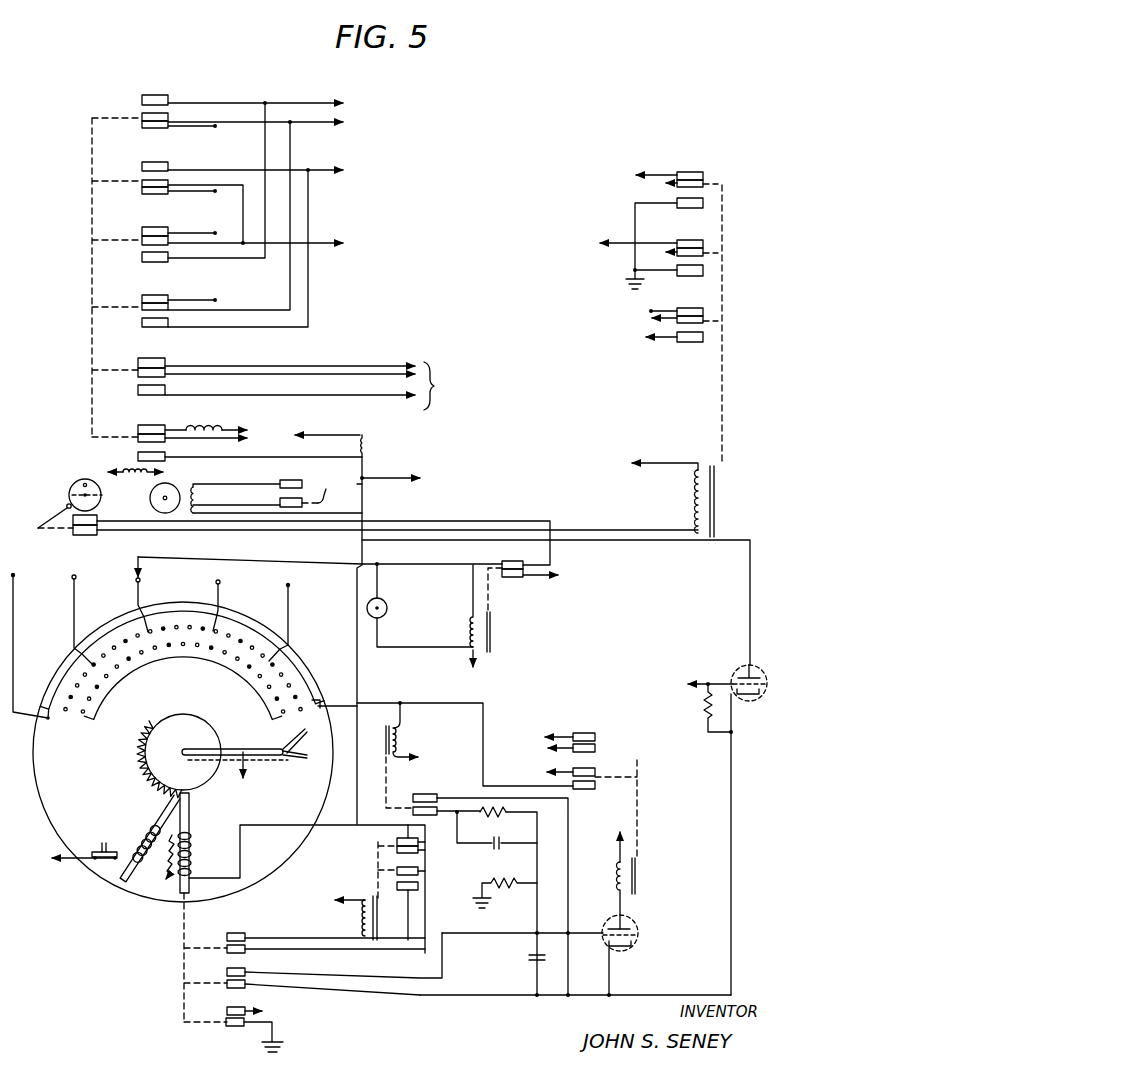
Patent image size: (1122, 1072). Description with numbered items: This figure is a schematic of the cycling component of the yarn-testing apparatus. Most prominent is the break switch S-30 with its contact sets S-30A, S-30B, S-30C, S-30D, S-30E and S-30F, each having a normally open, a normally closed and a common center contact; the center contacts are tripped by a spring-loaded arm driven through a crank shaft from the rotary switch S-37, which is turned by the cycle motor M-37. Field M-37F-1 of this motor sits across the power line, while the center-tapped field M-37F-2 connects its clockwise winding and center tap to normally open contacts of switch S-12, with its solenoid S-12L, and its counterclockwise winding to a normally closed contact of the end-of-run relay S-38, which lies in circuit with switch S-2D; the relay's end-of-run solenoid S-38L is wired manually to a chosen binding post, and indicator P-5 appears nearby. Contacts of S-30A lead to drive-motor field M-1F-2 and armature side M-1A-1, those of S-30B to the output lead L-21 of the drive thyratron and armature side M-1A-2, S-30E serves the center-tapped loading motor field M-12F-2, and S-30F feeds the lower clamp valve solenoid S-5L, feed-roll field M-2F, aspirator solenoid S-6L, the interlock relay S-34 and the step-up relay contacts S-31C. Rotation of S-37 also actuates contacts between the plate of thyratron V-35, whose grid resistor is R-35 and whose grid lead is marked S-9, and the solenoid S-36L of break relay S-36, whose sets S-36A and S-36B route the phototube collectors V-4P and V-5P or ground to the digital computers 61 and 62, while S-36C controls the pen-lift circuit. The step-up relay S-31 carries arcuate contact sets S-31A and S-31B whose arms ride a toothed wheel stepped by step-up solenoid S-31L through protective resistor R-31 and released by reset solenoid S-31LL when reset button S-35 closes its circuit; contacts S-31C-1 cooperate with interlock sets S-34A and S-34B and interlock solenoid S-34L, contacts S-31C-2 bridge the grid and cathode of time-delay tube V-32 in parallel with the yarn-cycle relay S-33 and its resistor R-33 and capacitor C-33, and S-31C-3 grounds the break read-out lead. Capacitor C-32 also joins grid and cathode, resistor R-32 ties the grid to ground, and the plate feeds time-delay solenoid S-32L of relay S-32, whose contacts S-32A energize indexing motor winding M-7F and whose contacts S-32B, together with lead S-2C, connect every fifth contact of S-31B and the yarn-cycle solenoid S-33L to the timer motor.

The break switch S-30 is at (108, 338).
The first set of break switch contacts S-30A is at (157, 111).
The second set of break switch contacts S-30B is at (171, 203).
The third set of break switch contacts S-30C is at (181, 182).
The fourth set of break switch contacts S-30D is at (203, 224).
The fifth set of break switch contacts S-30E is at (131, 375).
The sixth set of break switch contacts S-30F is at (230, 441).
The field coil of the drive motor M-1F-2 is at (282, 103).
The side of the armature winding of the drive motor M-1A-1 is at (284, 122).
The output lead from the drive thyratron L-21 is at (274, 170).
The side of the armature winding of the drive motor M-1A-2 is at (284, 243).
The center-tapped field winding of the loading motor M-12F-2 is at (330, 386).
The solenoid of the lower clamp valve S-5L is at (212, 420).
The solenoid for the aspirator valve S-6L is at (366, 446).
The field of the feed-roll motor M-2F is at (410, 478).
The rotary switch S-37 is at (64, 500).
The field of the cycle motor M-37F-1 is at (135, 480).
The cycle motor M-37 is at (140, 509).
The center-tapped field of the cycle motor M-37F-2 is at (197, 493).
The switch S-12 is at (304, 480).
The solenoid of switch S-12 S-12L is at (344, 486).
The break relay S-36 is at (703, 299).
The first set of break relay contacts S-36A is at (707, 221).
The second set of break relay contacts S-36B is at (701, 264).
The third set of break relay contacts S-36C is at (688, 326).
The collector of the tension-responsive phototube V-4P is at (625, 174).
The collector of the elongation-responsive photocell V-5P is at (618, 243).
The digital computing device 61 is at (651, 185).
The digital computing device 62 is at (651, 254).
The solenoid of the break relay S-36L is at (695, 500).
The end-of-run relay S-38 is at (502, 562).
The switch of the cam-actuated set S-2D is at (561, 575).
The lamp P-5 is at (420, 604).
The end-of-run solenoid S-38L is at (502, 624).
The thyratron V-35 is at (757, 830).
The lead to S-9 is at (693, 684).
The grid resistor R-35 is at (702, 709).
The yarn-cycle solenoid S-33L is at (417, 734).
The yarn-cycle relay S-33 is at (424, 796).
The resistor R-33 is at (496, 817).
The capacitor C-33 is at (497, 846).
The large resistor R-32 is at (505, 887).
The step-up interlock relay S-34 is at (378, 855).
The contact set of the step-up interlock relay S-34A is at (420, 849).
The contact set of the step-up interlock relay S-34B is at (420, 879).
The interlock solenoid S-34L is at (362, 915).
The time-delay relay S-32 is at (632, 765).
The contacts of the time-delay relay S-32A is at (573, 742).
The contacts of the time-delay relay S-32B is at (591, 778).
The winding of the indexing motor M-7F is at (520, 749).
The lead to S-2C is at (519, 773).
The time-delay solenoid S-32L is at (638, 874).
The time-delay tube V-32 is at (644, 955).
The large capacitor C-32 is at (527, 960).
The step-up relay S-31 is at (200, 815).
The outer arcuate contact set of the step-up relay S-31A is at (312, 738).
The arcuate contact set of the step-up relay S-31B is at (296, 766).
The step-up solenoid S-31L is at (192, 840).
The reset solenoid S-31LL is at (152, 828).
The protective resistor R-31 is at (153, 866).
The reset button S-35 is at (100, 850).
The step-up relay contacts S-31C is at (205, 970).
The first contact set of the step-up relay S-31C-1 is at (226, 934).
The second contact set of the step-up relay S-31C-2 is at (248, 968).
The third contact set of the step-up relay S-31C-3 is at (258, 1028).